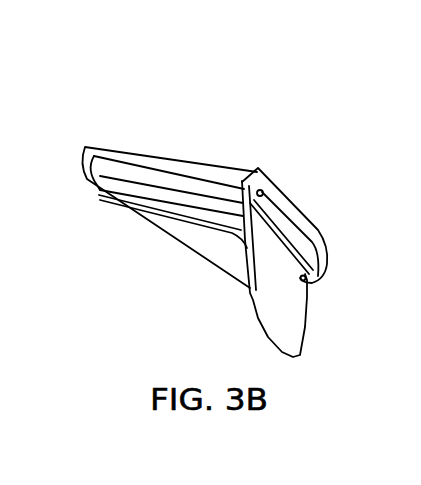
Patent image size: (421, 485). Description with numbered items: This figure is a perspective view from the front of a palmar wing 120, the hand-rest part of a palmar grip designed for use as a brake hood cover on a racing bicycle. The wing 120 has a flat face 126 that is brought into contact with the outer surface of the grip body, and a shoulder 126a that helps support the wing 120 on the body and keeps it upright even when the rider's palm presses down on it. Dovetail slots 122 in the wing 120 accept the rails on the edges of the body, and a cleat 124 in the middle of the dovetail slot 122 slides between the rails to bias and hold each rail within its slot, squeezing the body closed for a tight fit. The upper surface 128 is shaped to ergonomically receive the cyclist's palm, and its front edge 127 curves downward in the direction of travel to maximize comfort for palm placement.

The wing 120 is at (111, 118).
The dovetail slot 122 is at (261, 192).
The cleat 124 is at (313, 255).
The flat face 126 is at (297, 212).
The shoulder 126a is at (255, 312).
The front edge 127 is at (140, 168).
The upper surface 128 is at (173, 162).